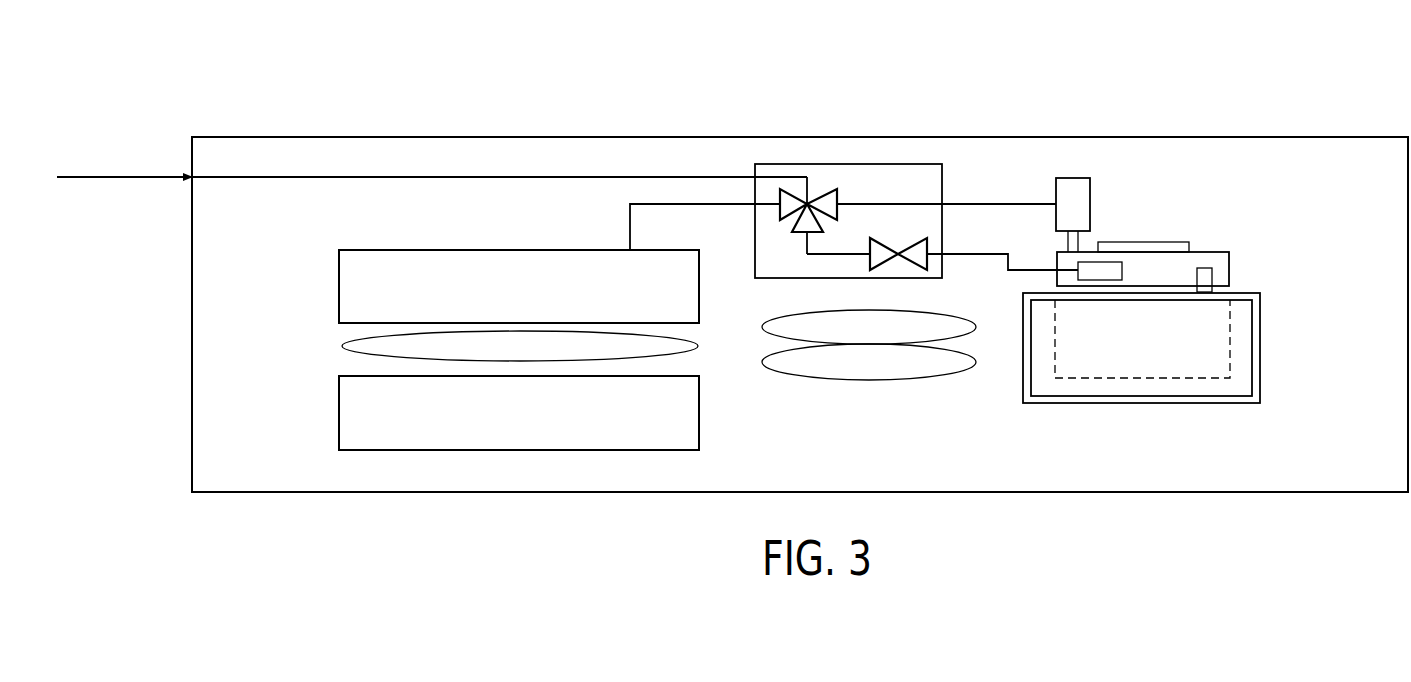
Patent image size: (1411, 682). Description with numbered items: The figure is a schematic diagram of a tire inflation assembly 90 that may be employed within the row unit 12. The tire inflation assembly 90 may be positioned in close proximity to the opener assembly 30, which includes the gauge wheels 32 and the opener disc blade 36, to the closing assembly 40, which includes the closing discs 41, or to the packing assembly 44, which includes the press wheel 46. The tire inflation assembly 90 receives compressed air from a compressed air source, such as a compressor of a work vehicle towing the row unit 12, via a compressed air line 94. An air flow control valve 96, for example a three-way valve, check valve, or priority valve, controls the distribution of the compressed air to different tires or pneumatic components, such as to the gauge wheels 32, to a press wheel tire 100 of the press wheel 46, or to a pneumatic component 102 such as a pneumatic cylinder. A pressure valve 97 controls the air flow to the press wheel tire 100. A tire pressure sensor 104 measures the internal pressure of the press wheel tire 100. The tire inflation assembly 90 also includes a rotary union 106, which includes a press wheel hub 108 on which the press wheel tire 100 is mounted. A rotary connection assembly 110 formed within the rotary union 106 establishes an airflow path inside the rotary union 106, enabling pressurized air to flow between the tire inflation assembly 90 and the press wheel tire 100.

The row unit 12 is at (1372, 100).
The opener assembly 30 is at (507, 331).
The gauge wheels 32 is at (666, 250).
The opener disc blade 36 is at (350, 345).
The closing assembly 40 is at (857, 341).
The closing discs 41 is at (973, 364).
The packing assembly 44 is at (1181, 306).
The press wheel 46 is at (1174, 378).
The tire inflation assembly 90 is at (567, 200).
The compressed air line 94 is at (630, 222).
The air flow control valve 96 is at (838, 195).
The pressure valve 97 is at (910, 266).
The press wheel tire 100 is at (1113, 396).
The pneumatic component 102 is at (1091, 203).
The tire pressure sensor 104 is at (1205, 268).
The rotary union 106 is at (1230, 266).
The press wheel hub 108 is at (1195, 378).
The rotary connection assembly 110 is at (1123, 275).